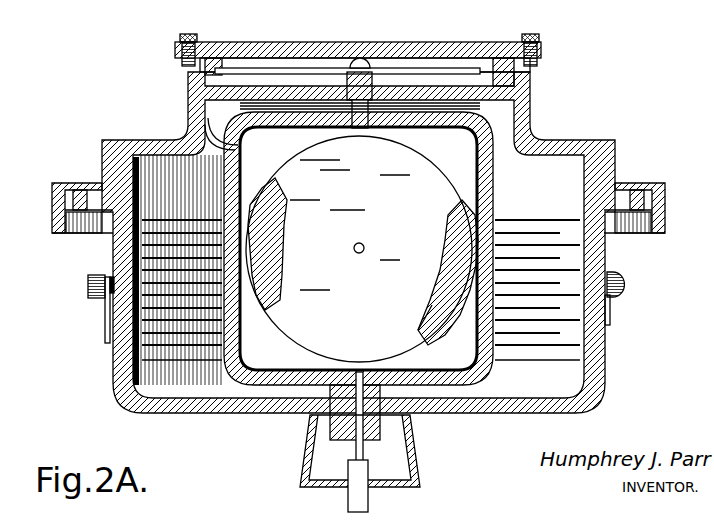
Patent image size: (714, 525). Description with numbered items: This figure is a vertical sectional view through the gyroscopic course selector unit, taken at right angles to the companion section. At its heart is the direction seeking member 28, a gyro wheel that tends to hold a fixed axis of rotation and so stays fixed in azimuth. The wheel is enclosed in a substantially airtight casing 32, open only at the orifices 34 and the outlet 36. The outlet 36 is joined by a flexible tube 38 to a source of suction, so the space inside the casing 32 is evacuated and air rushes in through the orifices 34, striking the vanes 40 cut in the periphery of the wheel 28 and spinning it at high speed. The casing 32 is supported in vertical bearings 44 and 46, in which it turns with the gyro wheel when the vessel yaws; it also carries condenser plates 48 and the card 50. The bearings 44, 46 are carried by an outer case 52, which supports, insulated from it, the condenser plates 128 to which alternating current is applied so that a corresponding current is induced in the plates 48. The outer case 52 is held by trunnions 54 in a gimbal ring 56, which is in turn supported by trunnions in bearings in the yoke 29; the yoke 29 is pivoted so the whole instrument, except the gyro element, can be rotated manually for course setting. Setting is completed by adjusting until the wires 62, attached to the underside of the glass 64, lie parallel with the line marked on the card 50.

The direction seeking member 28 is at (412, 223).
The yoke 29 is at (306, 440).
The casing 32 is at (495, 172).
The orifices 34 is at (268, 190).
The outlet 36 is at (322, 366).
The flexible tube 38 is at (370, 501).
The vanes 40 is at (425, 303).
The vertical bearing 44 is at (386, 83).
The vertical bearing 46 is at (412, 376).
The condenser plates 48 is at (205, 330).
The card 50 is at (413, 62).
The outer case 52 is at (368, 242).
The trunnions 54 is at (70, 185).
The gimbal ring 56 is at (52, 204).
The wires 62 is at (460, 50).
The glass 64 is at (291, 48).
The condenser plates 128 is at (190, 255).